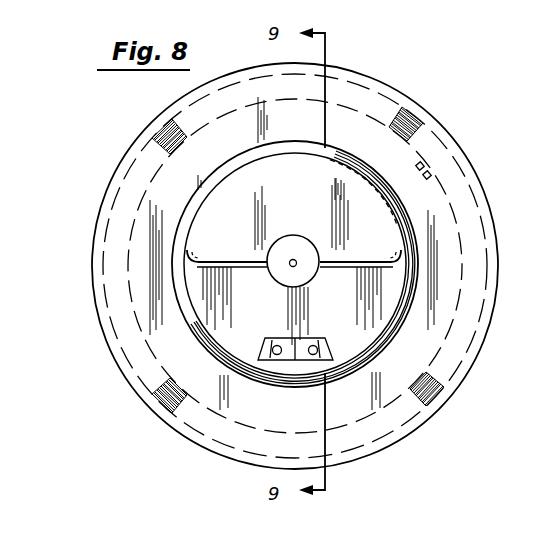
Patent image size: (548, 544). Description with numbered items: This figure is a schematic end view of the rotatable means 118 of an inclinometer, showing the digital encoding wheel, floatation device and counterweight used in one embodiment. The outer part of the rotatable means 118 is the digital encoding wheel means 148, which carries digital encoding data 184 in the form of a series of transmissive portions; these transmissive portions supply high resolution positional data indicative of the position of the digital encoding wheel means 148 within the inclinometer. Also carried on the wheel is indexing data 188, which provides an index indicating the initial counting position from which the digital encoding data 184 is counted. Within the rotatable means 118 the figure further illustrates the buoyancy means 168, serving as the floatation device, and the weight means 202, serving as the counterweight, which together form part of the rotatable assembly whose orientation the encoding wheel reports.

The rotatable means 118 is at (103, 143).
The digital encoding wheel means 148 is at (350, 119).
The buoyancy means 168 is at (309, 202).
The digital encoding data 184 is at (415, 117).
The indexing data 188 is at (437, 168).
The weight means 202 is at (285, 340).